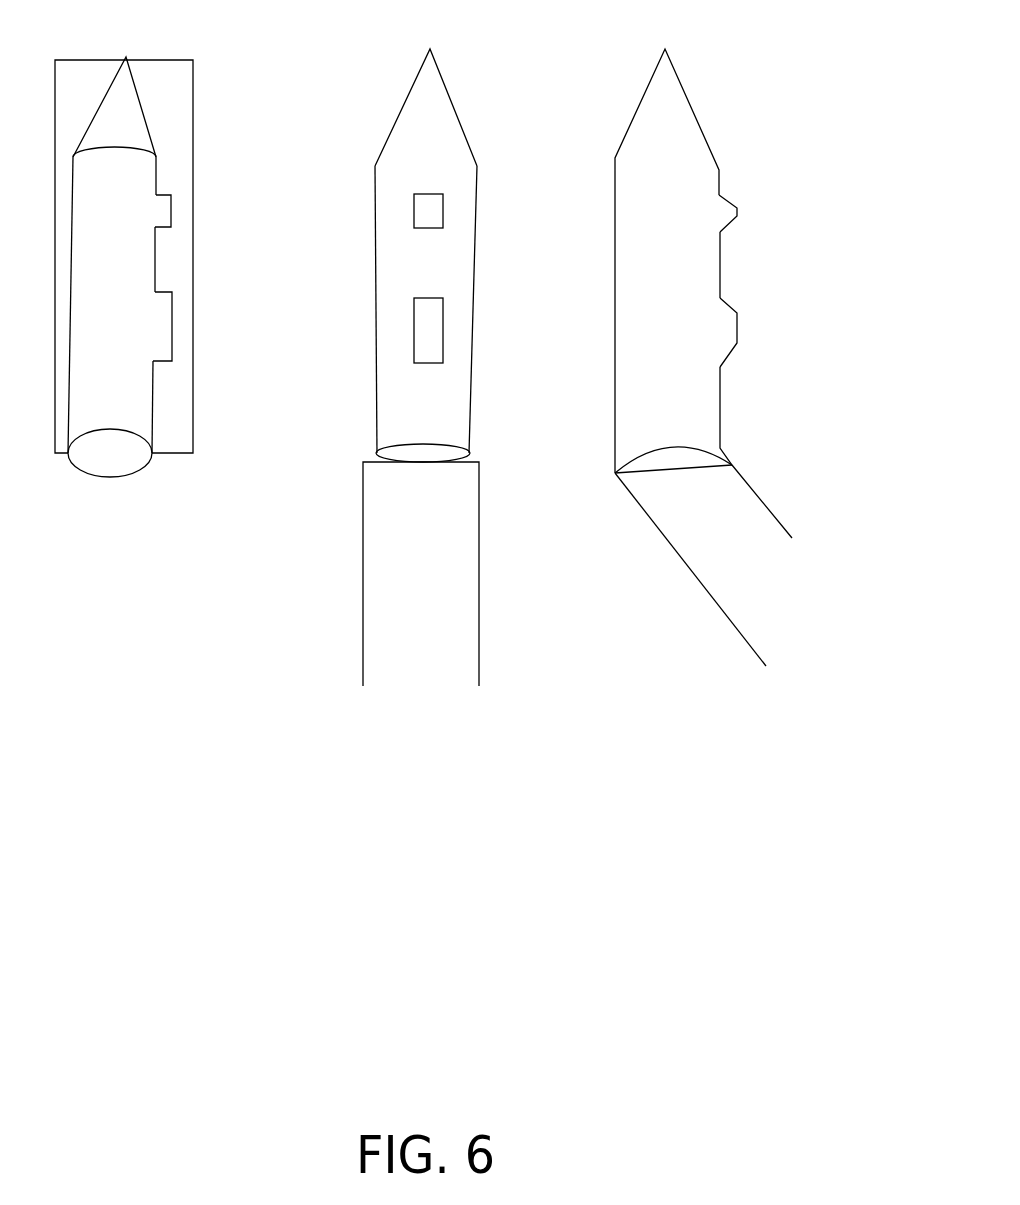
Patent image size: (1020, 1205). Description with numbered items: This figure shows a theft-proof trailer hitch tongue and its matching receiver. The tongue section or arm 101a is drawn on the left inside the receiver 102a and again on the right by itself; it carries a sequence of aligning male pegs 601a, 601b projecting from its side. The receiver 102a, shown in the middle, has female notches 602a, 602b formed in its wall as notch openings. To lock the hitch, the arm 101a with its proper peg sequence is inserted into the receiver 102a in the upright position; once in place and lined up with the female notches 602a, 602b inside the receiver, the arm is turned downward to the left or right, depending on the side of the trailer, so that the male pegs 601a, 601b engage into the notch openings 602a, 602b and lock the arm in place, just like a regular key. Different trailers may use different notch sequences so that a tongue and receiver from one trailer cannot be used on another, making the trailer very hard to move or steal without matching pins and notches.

The tongue section or arm 101a is at (156, 177).
The receiver 102a is at (177, 115).
The male peg 601a is at (171, 210).
The male peg 601b is at (172, 325).
The female notch 602a is at (432, 213).
The female notch 602b is at (427, 330).